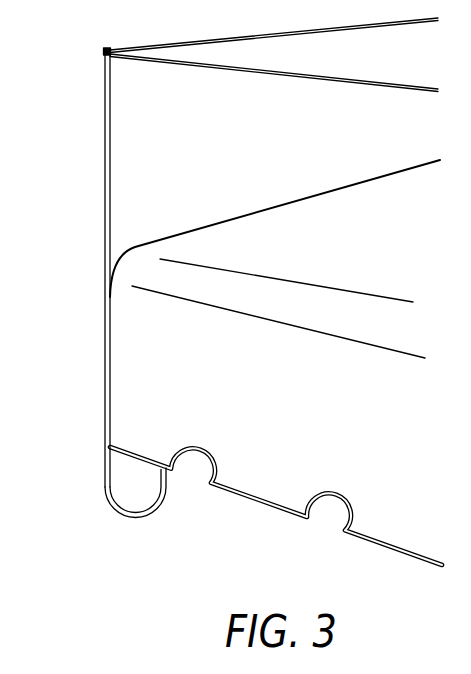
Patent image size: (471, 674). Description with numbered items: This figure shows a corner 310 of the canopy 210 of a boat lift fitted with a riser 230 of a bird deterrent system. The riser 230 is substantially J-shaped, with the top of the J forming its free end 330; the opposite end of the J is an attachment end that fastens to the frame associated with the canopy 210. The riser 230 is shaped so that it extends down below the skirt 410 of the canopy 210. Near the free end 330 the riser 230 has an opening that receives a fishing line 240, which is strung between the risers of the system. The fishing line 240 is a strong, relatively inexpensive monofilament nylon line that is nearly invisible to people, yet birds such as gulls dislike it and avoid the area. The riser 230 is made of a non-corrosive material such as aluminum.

The canopy 210 is at (287, 222).
The riser 230 is at (105, 167).
The fishing line 240 is at (283, 73).
The corner 310 is at (117, 327).
The free end 330 is at (104, 50).
The skirt 410 is at (257, 483).